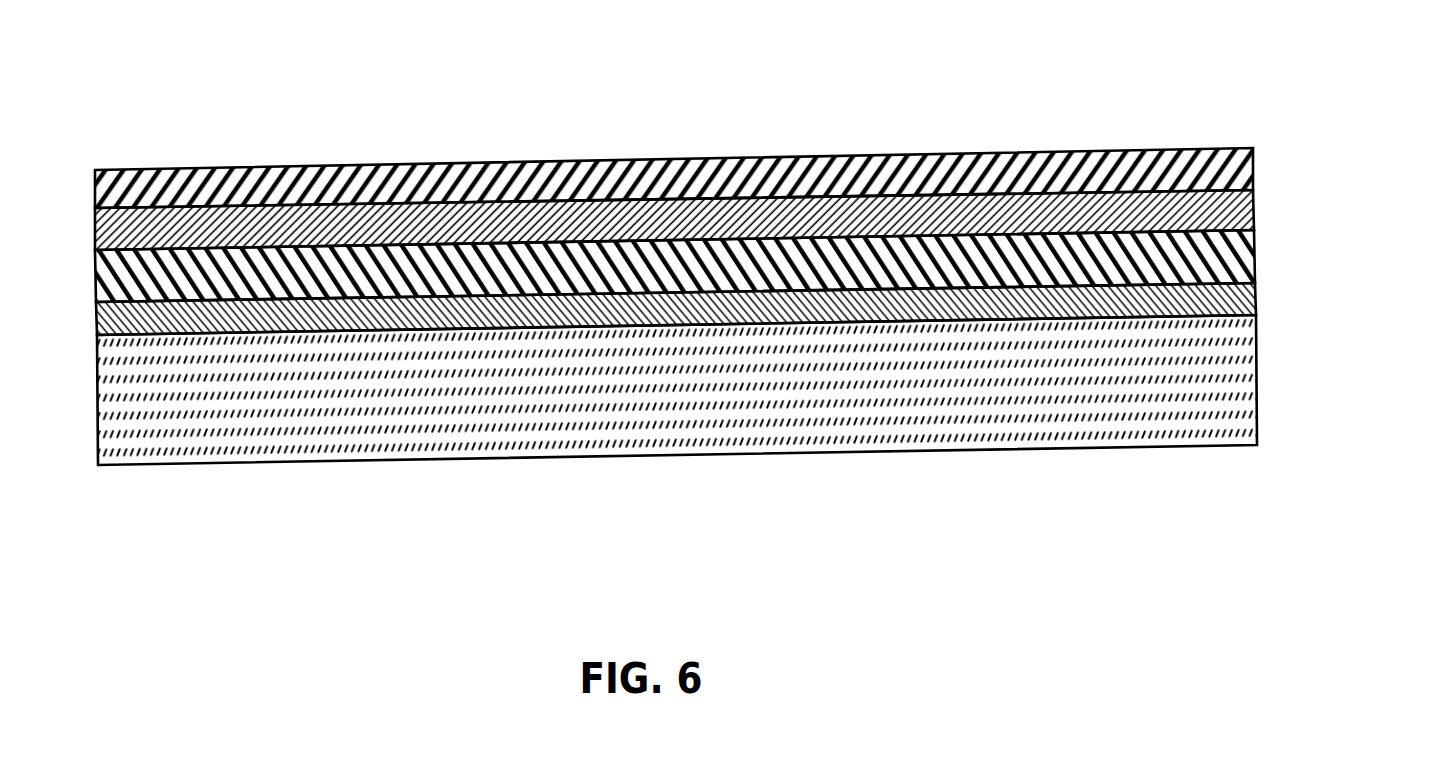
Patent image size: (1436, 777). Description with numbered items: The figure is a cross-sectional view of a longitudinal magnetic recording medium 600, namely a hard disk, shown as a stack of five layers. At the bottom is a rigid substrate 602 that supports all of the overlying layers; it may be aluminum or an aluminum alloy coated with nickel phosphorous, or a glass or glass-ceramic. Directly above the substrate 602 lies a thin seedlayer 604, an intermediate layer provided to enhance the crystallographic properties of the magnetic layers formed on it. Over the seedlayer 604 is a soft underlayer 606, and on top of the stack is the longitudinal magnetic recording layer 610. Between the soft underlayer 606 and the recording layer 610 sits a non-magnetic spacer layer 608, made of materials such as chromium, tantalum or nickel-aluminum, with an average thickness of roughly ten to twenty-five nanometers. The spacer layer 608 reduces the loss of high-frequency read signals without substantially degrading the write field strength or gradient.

The magnetic recording medium 600 is at (763, 287).
The substrate 602 is at (693, 453).
The seedlayer 604 is at (1256, 298).
The soft underlayer 606 is at (1255, 252).
The non-magnetic spacer layer 608 is at (1254, 208).
The longitudinal magnetic recording layer 610 is at (1253, 168).